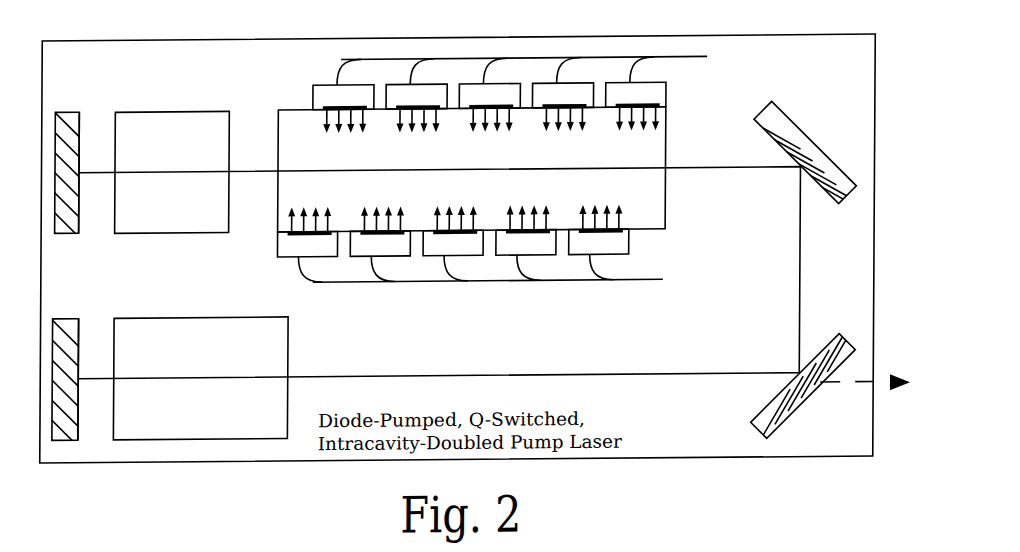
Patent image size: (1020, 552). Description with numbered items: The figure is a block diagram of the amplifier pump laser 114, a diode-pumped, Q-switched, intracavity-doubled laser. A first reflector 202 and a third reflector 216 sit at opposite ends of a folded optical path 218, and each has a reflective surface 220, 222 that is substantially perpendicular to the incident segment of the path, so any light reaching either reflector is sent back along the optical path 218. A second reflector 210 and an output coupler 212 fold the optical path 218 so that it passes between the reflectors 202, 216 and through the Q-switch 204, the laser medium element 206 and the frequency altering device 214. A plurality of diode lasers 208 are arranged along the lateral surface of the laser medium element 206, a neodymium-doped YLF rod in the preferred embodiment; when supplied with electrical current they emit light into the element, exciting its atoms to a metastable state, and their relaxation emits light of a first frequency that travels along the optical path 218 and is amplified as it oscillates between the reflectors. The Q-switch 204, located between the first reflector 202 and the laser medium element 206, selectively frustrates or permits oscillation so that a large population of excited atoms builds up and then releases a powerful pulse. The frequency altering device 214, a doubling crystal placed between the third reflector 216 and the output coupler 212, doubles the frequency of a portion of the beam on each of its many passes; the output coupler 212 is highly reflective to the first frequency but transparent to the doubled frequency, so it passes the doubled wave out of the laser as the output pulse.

The amplifier pump laser 114 is at (377, 36).
The first reflector 202 is at (64, 110).
The reflective surface 220 is at (81, 119).
The Q-switch 204 is at (228, 120).
The laser medium element 206 is at (699, 221).
The diode lasers 208 is at (516, 172).
The second reflector 210 is at (799, 130).
The output coupler 212 is at (791, 423).
The frequency altering device 214 is at (288, 339).
The third reflector 216 is at (65, 314).
The reflective surface 222 is at (80, 337).
The folded optical path 218 is at (756, 170).